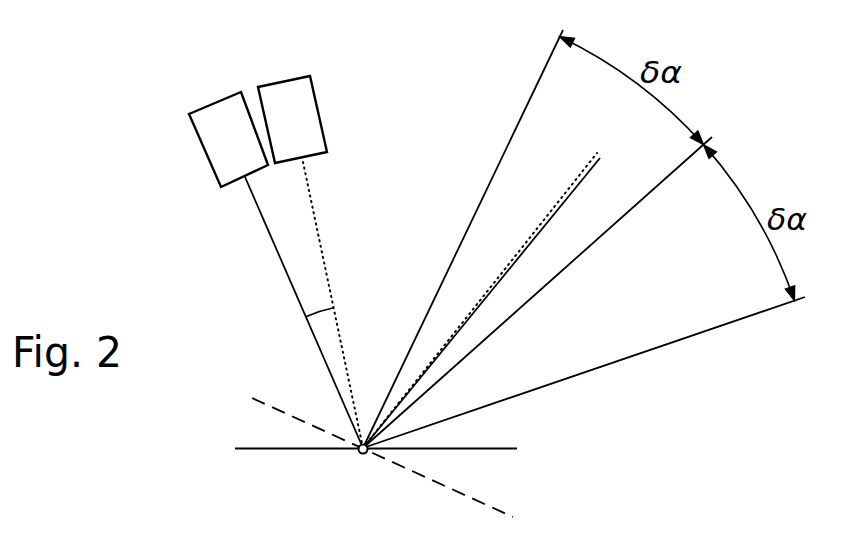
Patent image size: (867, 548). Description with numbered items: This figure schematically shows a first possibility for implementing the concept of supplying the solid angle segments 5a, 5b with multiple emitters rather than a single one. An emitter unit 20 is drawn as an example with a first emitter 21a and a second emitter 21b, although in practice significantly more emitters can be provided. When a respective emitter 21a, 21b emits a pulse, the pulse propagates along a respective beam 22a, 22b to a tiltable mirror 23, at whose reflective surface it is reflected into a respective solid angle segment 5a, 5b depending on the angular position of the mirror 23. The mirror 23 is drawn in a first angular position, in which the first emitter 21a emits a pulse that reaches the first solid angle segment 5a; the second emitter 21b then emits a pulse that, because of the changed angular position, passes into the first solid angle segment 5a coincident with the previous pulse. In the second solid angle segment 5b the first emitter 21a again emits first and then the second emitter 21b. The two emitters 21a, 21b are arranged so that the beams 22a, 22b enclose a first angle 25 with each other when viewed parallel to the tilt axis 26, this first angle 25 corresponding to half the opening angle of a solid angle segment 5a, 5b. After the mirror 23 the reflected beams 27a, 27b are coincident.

The emitter unit 20 is at (287, 96).
The first emitter 21a is at (208, 103).
The second emitter 21b is at (285, 78).
The first beam 22a is at (258, 212).
The second beam 22b is at (313, 207).
The first angle 25 is at (330, 313).
The first solid angle segment 5a is at (547, 147).
The second solid angle segment 5b is at (737, 282).
The first reflected beam 27a is at (557, 212).
The second reflected beam 27b is at (563, 193).
The tiltable mirror 23 is at (272, 450).
The tilt axis 26 is at (360, 453).